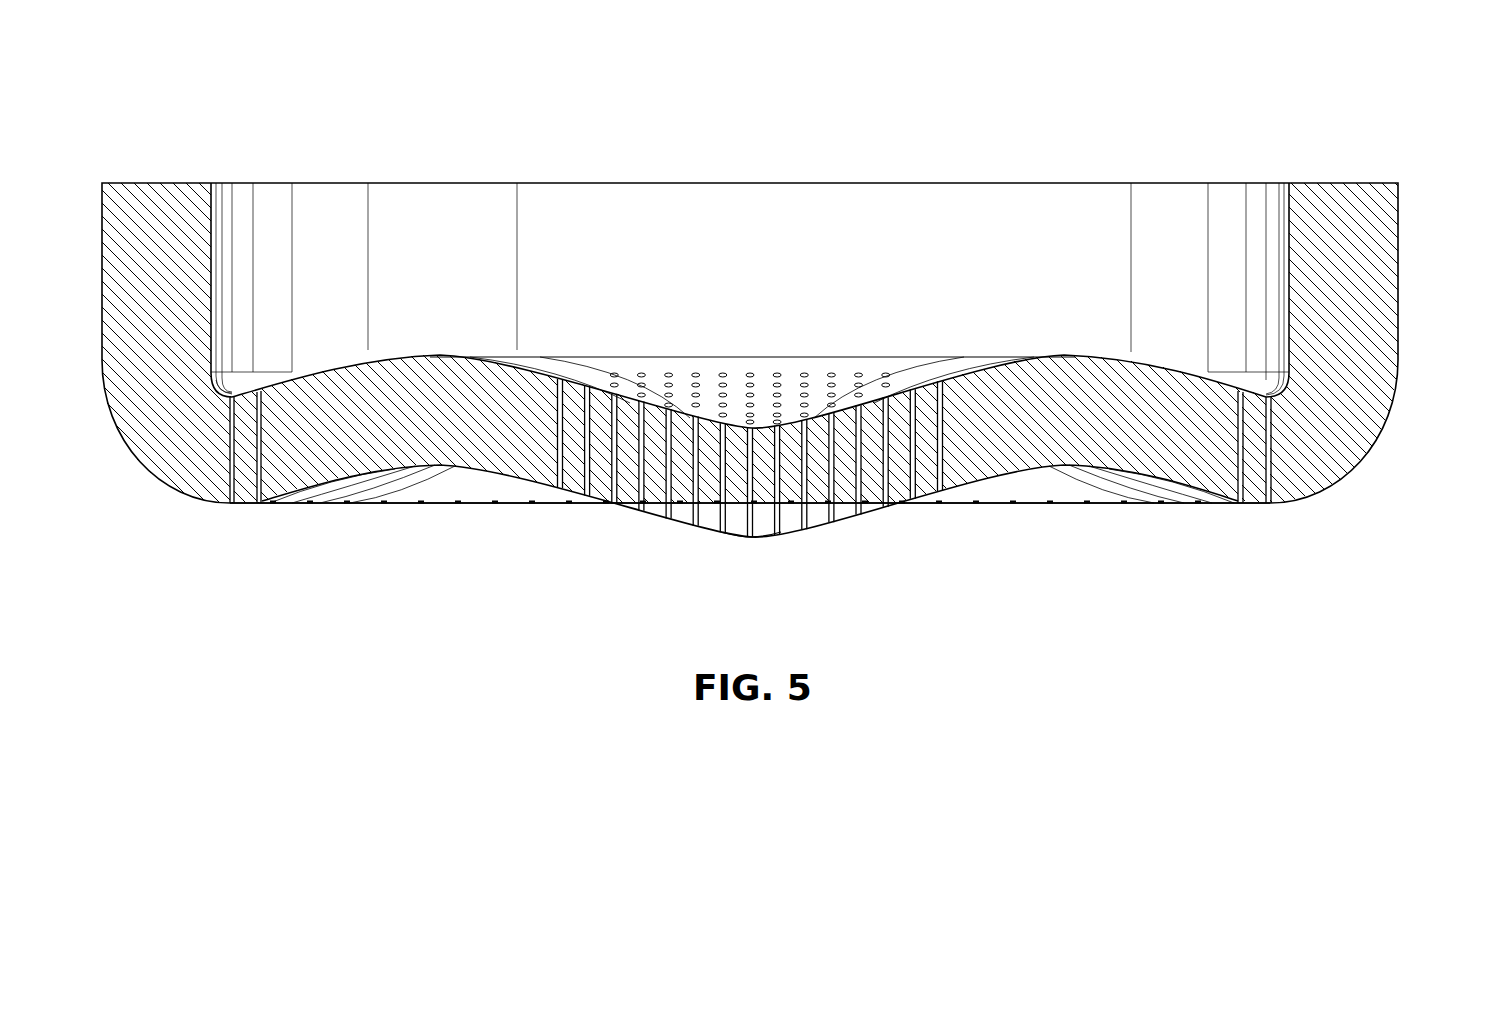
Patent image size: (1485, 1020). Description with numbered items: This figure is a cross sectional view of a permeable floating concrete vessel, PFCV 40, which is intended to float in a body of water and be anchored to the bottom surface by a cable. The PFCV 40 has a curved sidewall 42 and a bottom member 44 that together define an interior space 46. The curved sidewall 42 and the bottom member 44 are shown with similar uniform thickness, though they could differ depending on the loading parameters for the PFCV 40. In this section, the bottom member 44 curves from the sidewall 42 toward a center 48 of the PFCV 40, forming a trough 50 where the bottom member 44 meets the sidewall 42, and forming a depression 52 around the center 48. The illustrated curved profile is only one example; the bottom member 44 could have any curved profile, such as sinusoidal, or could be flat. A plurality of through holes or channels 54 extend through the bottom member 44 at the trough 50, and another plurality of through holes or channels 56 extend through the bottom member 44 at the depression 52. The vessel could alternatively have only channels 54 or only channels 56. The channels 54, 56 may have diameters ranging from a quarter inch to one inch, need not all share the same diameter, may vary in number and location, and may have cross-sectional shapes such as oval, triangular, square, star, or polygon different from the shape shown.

The permeable floating concrete vessel 40 is at (1298, 82).
The curved sidewall 42 is at (1358, 252).
The bottom member 44 is at (1063, 372).
The interior space 46 is at (1163, 212).
The center 48 is at (757, 542).
The trough 50 is at (228, 393).
The depression 52 is at (794, 362).
The through holes or channels 54 is at (232, 504).
The through holes or channels 56 is at (697, 375).